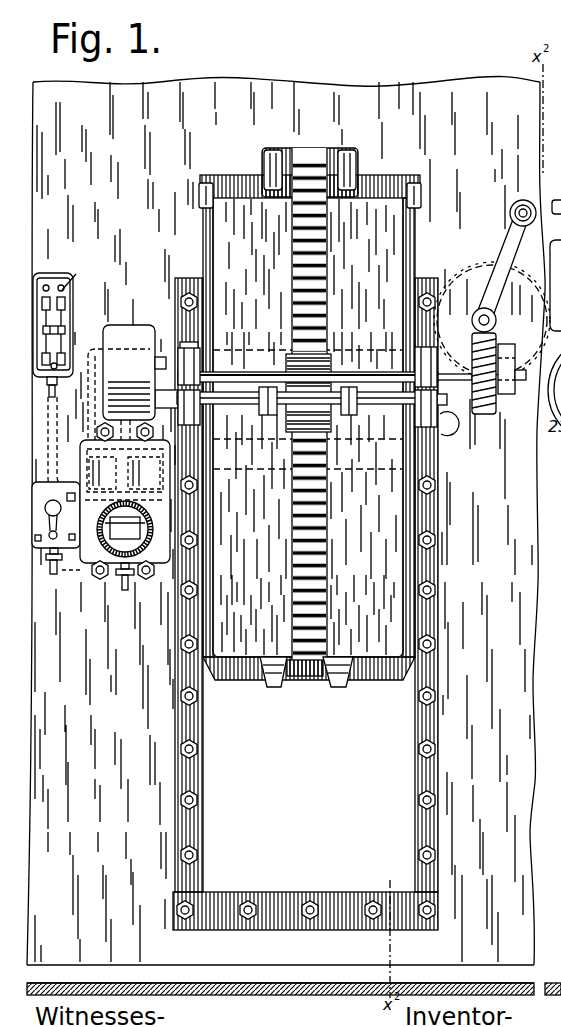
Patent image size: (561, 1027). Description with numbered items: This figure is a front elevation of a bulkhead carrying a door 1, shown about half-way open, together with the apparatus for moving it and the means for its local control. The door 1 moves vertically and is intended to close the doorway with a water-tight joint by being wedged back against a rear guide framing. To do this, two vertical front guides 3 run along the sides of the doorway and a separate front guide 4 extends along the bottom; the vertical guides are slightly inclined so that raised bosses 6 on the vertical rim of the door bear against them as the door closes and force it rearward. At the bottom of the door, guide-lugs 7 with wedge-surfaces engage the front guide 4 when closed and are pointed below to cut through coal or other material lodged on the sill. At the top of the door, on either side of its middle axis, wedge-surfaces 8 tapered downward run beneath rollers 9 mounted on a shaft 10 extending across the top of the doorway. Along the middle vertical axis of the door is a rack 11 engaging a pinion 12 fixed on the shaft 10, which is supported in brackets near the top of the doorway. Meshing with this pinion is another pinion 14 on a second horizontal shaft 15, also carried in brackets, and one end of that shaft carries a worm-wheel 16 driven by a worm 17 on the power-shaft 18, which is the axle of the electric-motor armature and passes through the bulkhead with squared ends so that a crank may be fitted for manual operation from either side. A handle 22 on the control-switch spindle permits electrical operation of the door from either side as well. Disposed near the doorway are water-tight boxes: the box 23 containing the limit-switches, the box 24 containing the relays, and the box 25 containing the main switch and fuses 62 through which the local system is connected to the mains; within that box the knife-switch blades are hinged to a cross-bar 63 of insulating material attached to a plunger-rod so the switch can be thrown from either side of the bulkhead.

The door 1 is at (405, 251).
The vertical front guides 3 is at (203, 818).
The front guide 4 is at (224, 893).
The raised bosses 6 is at (421, 197).
The guide-lugs 7 is at (268, 682).
The wedge-surfaces 8 is at (263, 164).
The rollers 9 is at (355, 393).
The shaft 10 is at (454, 422).
The rack 11 is at (312, 158).
The pinion 12 is at (330, 418).
The pinion 14 is at (288, 366).
The horizontal shaft 15 is at (516, 370).
The worm-wheel 16 is at (497, 404).
The worm 17 is at (492, 320).
The power-shaft 18 is at (472, 318).
The handle 22 is at (50, 566).
The box 23 is at (134, 363).
The box 24 is at (125, 509).
The box 25 is at (72, 344).
The fuses 62 is at (79, 273).
The cross-bar 63 is at (62, 326).